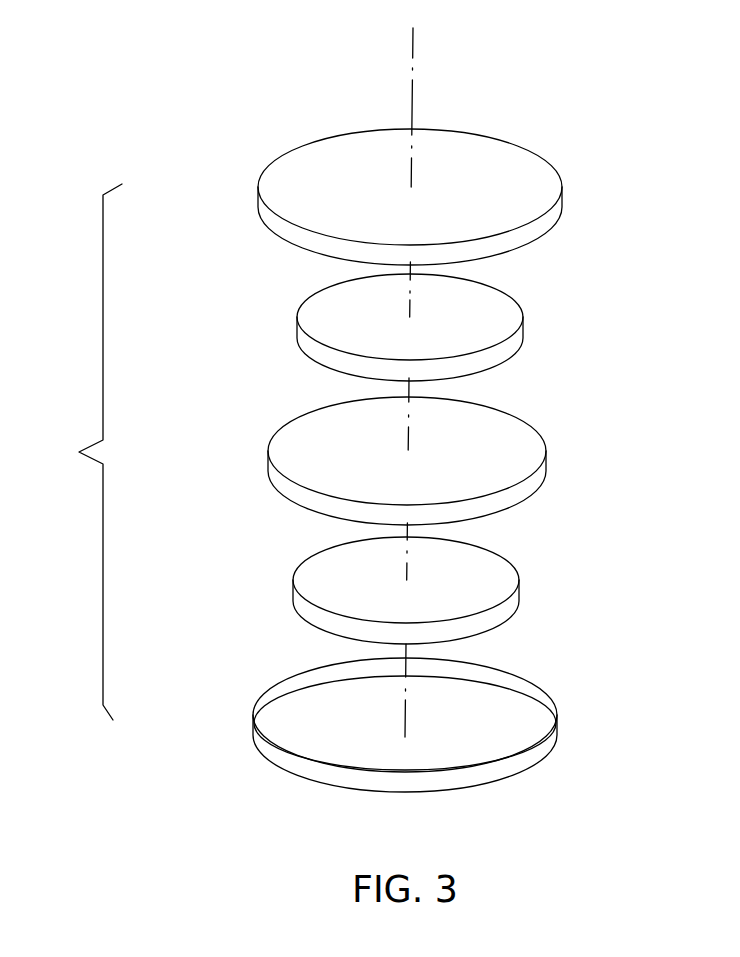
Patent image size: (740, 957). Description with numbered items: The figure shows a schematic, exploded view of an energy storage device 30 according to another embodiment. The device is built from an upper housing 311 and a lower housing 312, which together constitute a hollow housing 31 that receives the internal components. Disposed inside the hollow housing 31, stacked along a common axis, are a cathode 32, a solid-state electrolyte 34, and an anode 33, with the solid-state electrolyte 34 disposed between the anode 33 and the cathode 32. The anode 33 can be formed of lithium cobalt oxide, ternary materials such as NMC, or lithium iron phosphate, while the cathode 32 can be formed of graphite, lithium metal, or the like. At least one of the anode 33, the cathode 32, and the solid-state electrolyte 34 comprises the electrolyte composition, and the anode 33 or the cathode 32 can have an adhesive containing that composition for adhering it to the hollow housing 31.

The energy storage device 30 is at (176, 71).
The hollow housing 31 is at (78, 452).
The upper housing 311 is at (280, 185).
The lower housing 312 is at (255, 712).
The cathode 32 is at (503, 315).
The anode 33 is at (493, 580).
The solid-state electrolyte 34 is at (513, 450).